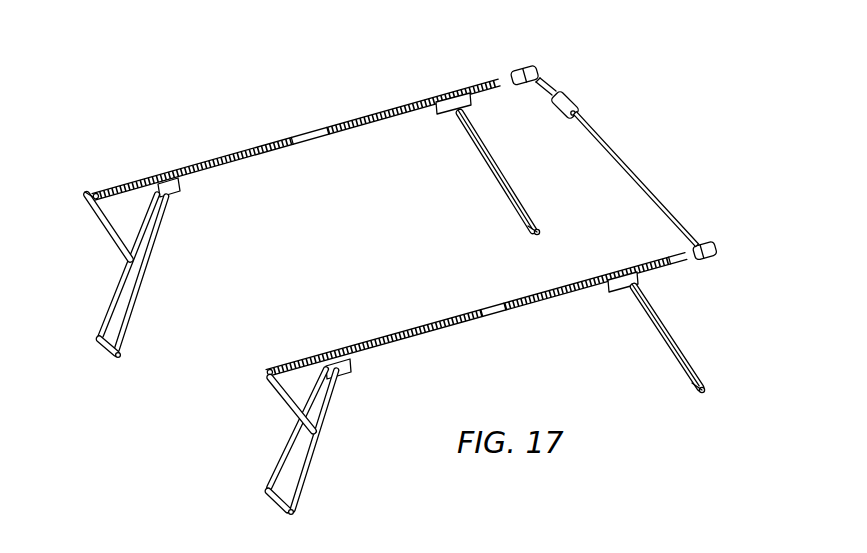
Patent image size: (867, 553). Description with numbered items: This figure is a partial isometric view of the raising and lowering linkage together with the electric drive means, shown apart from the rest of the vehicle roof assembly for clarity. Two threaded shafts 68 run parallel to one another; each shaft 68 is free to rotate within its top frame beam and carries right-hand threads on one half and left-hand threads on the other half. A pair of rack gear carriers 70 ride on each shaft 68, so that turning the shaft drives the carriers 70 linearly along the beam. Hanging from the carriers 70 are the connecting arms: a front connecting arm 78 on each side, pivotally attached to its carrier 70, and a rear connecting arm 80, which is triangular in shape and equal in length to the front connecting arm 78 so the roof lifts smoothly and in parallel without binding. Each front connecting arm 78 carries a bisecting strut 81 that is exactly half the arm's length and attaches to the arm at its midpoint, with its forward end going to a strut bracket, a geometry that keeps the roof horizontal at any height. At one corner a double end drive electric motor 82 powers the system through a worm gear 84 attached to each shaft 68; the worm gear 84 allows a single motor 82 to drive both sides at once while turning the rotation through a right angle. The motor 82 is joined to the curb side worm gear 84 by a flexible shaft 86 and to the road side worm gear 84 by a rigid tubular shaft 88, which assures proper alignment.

The shaft 68 is at (222, 160).
The rack gear carrier 70 is at (172, 192).
The front connecting arm 78 is at (127, 340).
The rear connecting arm 80 is at (482, 160).
The bisecting strut 81 is at (107, 240).
The double end drive electric motor 82 is at (575, 110).
The worm gear 84 is at (532, 66).
The flexible shaft 86 is at (548, 85).
The rigid tubular shaft 88 is at (652, 188).